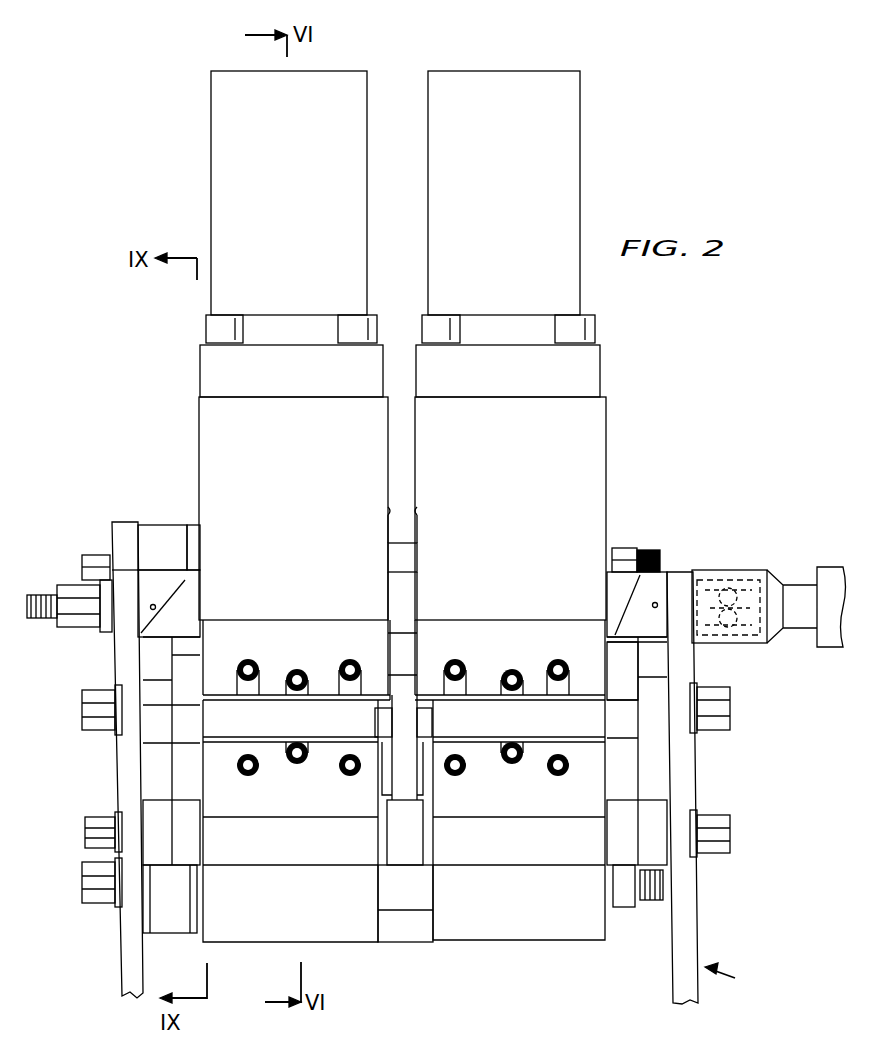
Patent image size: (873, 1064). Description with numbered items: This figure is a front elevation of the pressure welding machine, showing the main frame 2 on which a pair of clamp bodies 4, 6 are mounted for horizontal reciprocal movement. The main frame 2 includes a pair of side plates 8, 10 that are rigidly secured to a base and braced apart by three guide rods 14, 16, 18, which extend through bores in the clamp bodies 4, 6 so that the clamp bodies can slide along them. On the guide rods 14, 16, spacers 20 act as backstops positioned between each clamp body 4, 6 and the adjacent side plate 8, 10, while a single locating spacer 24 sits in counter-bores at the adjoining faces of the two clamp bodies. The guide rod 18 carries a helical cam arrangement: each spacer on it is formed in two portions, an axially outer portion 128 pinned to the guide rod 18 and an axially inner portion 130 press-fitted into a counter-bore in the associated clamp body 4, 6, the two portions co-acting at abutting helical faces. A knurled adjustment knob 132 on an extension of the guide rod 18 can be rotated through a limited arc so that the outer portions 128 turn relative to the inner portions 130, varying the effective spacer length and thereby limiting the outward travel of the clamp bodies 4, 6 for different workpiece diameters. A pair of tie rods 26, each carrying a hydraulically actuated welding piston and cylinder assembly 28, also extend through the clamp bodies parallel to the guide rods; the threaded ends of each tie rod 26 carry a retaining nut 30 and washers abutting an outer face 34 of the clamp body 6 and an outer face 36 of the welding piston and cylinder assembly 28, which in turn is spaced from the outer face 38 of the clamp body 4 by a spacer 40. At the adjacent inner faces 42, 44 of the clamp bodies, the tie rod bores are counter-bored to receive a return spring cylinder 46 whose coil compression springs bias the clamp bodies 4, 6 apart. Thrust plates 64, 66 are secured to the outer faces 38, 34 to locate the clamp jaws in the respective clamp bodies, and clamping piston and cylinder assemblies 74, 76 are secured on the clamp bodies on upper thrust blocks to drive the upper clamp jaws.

The main frame 2 is at (729, 976).
The clamp body 4 is at (295, 921).
The clamp body 6 is at (527, 921).
The side plate 8 is at (118, 962).
The side plate 10 is at (690, 925).
The guide rod 14 is at (80, 832).
The guide rod 16 is at (80, 712).
The guide rod 18 is at (50, 620).
The spacer 20 is at (148, 820).
The locating spacer 24 is at (408, 620).
The tie rod 26 is at (72, 590).
The welding piston and cylinder assembly 28 is at (160, 535).
The retaining nut 30 is at (95, 558).
The outer face 34 is at (607, 506).
The outer face 36 is at (112, 530).
The outer face 38 is at (199, 440).
The spacer 40 is at (193, 545).
The inner face 42 is at (392, 512).
The inner face 44 is at (413, 512).
The return spring cylinder 46 is at (408, 553).
The thrust plate 64 is at (203, 662).
The thrust plate 66 is at (630, 660).
The clamping piston and cylinder assembly 74 is at (309, 232).
The clamping piston and cylinder assembly 76 is at (515, 232).
The spacer outer portion 128 is at (158, 588).
The spacer inner portion 130 is at (185, 600).
The knurled adjustment knob 132 is at (190, 640).